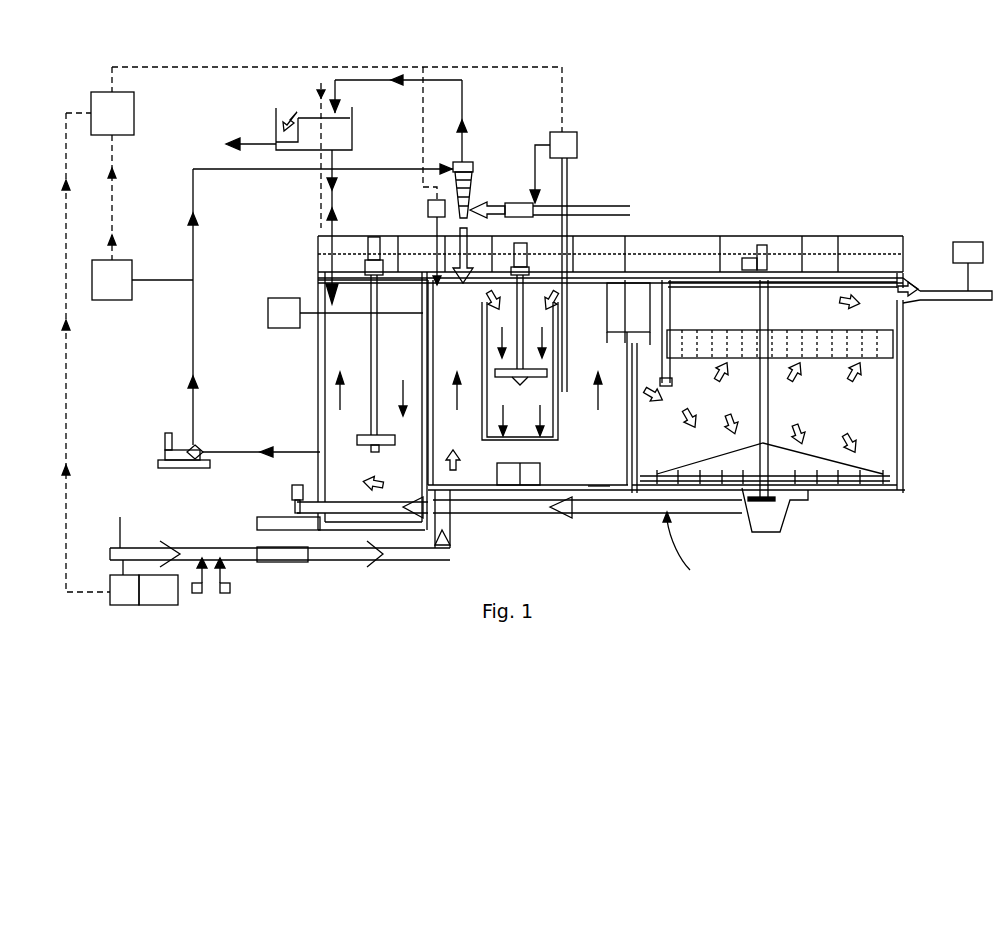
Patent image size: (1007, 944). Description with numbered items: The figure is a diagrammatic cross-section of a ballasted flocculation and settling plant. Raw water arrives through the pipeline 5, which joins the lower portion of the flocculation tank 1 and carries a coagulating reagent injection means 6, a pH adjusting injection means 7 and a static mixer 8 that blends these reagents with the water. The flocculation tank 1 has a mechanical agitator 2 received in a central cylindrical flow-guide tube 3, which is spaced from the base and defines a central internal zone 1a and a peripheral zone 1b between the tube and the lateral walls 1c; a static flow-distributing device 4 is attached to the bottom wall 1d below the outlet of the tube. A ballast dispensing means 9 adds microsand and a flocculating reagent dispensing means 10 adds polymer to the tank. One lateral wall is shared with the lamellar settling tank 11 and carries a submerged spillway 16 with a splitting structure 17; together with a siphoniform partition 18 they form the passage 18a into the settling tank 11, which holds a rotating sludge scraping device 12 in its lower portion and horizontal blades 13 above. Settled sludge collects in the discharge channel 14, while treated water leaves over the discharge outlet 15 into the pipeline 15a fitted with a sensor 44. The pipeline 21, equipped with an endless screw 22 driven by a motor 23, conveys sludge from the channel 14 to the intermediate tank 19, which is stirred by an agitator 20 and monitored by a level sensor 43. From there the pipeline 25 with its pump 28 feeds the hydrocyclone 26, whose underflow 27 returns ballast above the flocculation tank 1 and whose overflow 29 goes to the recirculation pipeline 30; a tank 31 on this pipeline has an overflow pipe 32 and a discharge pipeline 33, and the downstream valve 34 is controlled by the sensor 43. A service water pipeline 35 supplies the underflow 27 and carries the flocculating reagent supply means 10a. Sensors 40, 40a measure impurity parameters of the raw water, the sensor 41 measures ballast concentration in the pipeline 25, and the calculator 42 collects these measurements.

The flocculation tank 1 is at (573, 471).
The central internal zone 1a is at (531, 426).
The peripheral zone 1b is at (466, 334).
The lateral walls 1c is at (435, 420).
The bottom wall 1d is at (588, 486).
The mechanical agitator 2 is at (492, 370).
The flow-guide tube 3 is at (547, 393).
The static flow-distributing device 4 is at (505, 475).
The pipeline 5 is at (120, 517).
The coagulating reagent injection means 6 is at (204, 590).
The pH adjusting injection means 7 is at (232, 588).
The static mixer 8 is at (290, 560).
The ballast dispensing means 9 is at (428, 212).
The flocculating reagent dispensing means 10 is at (575, 183).
The flocculating reagent supply means 10a is at (537, 145).
The lamellar settling tank 11 is at (879, 418).
The rotating sludge scraping device 12 is at (780, 470).
The horizontal blades 13 is at (777, 330).
The discharge channel 14 is at (790, 495).
The discharge outlet 15 is at (910, 290).
The pipeline 15a is at (940, 305).
The submerged spillway 16 is at (620, 333).
The splitting structure 17 is at (639, 314).
The siphoniform partition 18 is at (670, 373).
The passage 18a is at (653, 333).
The intermediate tank 19 is at (358, 476).
The agitator 20 is at (385, 442).
The pipeline 21 is at (686, 553).
The endless screw 22 is at (590, 520).
The motor 23 is at (292, 492).
The pipeline 25 is at (210, 172).
The hydrocyclone 26 is at (477, 176).
The underflow 27 is at (475, 218).
The pump 28 is at (197, 445).
The overflow 29 is at (464, 162).
The recirculation pipeline 30 is at (320, 172).
The tank 31 is at (345, 125).
The overflow pipe 32 is at (296, 118).
The discharge pipeline 33 is at (262, 140).
The valve 34 is at (340, 185).
The service water pipeline 35 is at (500, 203).
The sensor 40 is at (124, 582).
The sensor 40a is at (158, 590).
The sensor 41 is at (142, 280).
The calculator 42 is at (112, 113).
The sensor 43 is at (345, 313).
The sensor 44 is at (968, 266).